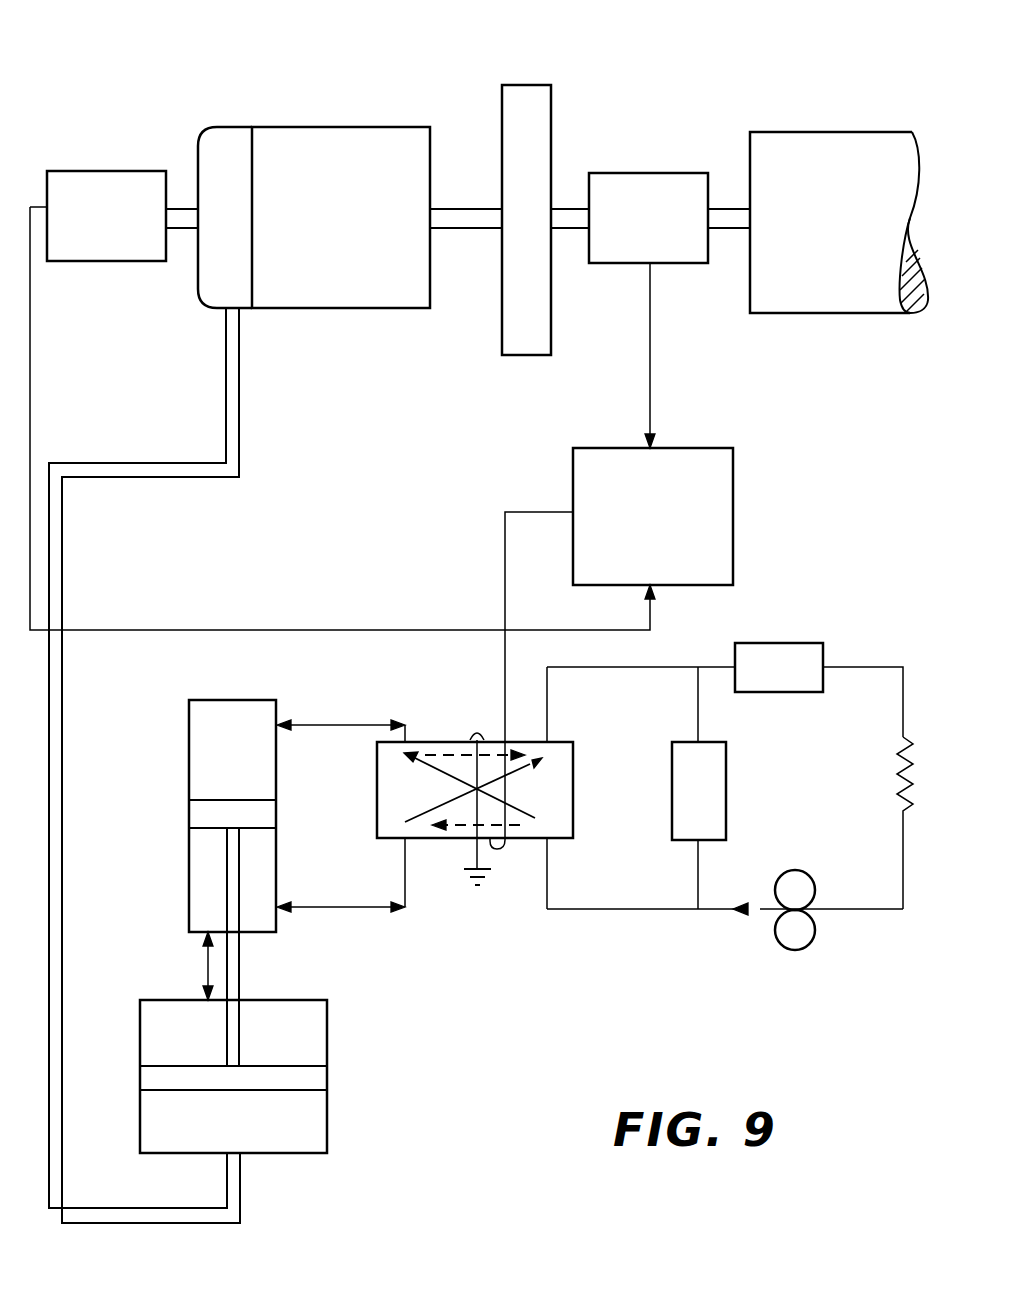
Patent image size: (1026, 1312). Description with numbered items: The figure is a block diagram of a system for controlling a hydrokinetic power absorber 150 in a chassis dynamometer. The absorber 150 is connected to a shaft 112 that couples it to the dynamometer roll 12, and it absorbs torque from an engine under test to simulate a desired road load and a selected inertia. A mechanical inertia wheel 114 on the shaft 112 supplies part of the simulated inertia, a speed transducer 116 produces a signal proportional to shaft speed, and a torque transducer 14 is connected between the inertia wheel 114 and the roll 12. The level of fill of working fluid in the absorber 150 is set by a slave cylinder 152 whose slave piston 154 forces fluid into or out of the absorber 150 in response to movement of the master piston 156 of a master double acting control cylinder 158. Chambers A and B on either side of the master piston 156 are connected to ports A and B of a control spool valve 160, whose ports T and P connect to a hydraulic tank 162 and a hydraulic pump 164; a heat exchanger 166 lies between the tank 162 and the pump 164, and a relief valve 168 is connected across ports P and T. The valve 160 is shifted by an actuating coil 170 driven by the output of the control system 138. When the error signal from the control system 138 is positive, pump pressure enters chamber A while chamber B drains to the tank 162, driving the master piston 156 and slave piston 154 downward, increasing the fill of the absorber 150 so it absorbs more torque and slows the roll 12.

The dynamometer roll 12 is at (836, 132).
The torque transducer 14 is at (615, 173).
The shaft 112 is at (718, 210).
The mechanical inertia wheel 114 is at (525, 85).
The speed transducer 116 is at (92, 171).
The control system 138 is at (735, 455).
The hydrokinetic power absorber 150 is at (332, 127).
The slave cylinder 152 is at (327, 1132).
The slave piston 154 is at (293, 1066).
The master piston 156 is at (215, 800).
The master double acting control cylinder 158 is at (189, 890).
The control spool valve 160 is at (375, 808).
The hydraulic tank 162 is at (803, 643).
The hydraulic pump 164 is at (775, 933).
The heat exchanger 166 is at (908, 746).
The relief valve 168 is at (672, 760).
The actuating coil 170 is at (483, 736).